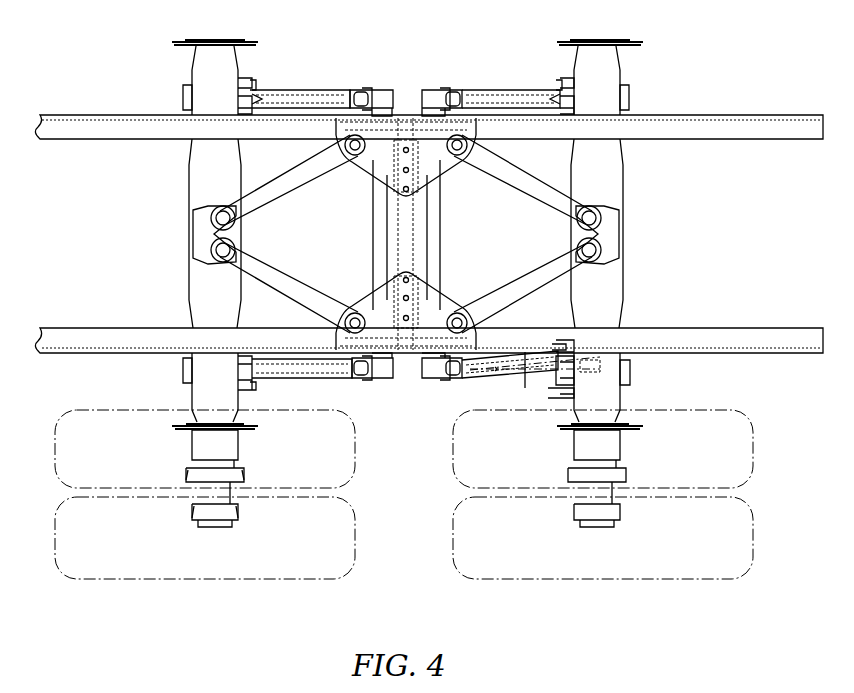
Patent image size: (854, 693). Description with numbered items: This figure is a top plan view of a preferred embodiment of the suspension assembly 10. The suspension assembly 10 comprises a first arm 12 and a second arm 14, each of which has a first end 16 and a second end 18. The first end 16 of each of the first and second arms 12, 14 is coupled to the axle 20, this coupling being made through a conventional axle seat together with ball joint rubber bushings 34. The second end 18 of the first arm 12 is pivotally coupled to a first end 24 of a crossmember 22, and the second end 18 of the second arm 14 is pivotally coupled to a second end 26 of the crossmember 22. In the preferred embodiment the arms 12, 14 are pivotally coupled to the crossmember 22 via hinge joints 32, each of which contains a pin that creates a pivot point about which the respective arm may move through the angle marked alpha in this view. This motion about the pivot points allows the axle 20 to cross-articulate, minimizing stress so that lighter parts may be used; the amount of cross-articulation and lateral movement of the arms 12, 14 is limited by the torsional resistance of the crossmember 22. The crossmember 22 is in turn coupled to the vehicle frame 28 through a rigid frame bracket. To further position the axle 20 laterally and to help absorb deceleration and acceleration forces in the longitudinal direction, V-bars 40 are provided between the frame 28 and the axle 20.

The suspension assembly 10 is at (404, 73).
The first arm 12 is at (508, 380).
The second arm 14 is at (510, 92).
The first end 16 is at (553, 78).
The second end 18 is at (445, 82).
The axle 20 is at (612, 180).
The crossmember 22 is at (432, 198).
The first end 24 is at (405, 318).
The second end 26 is at (400, 148).
The vehicle frame 28 is at (768, 345).
The hinge joint 32 is at (455, 99).
The ball joint rubber bushing 34 is at (597, 62).
The V-bar 40 is at (512, 182).